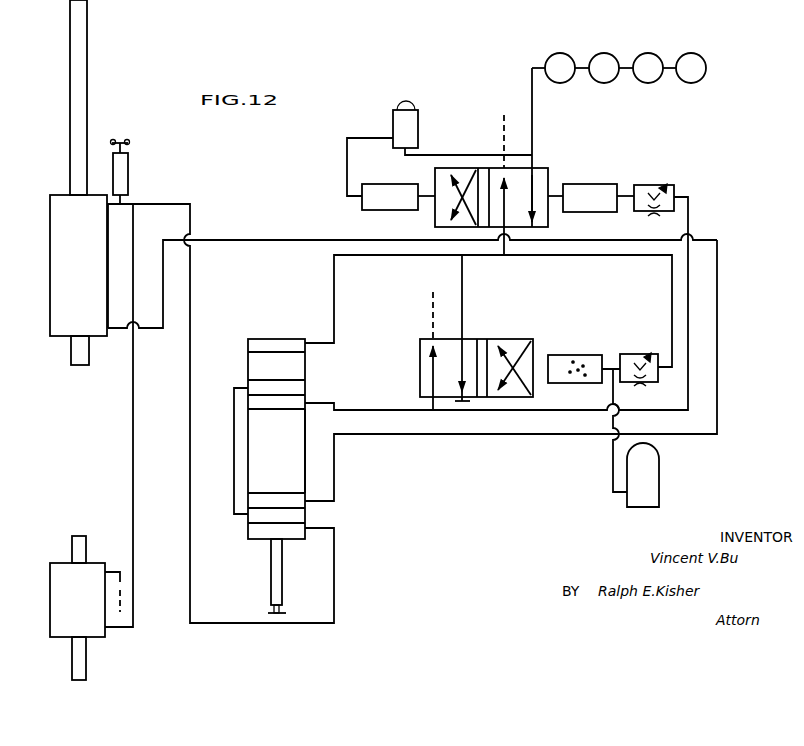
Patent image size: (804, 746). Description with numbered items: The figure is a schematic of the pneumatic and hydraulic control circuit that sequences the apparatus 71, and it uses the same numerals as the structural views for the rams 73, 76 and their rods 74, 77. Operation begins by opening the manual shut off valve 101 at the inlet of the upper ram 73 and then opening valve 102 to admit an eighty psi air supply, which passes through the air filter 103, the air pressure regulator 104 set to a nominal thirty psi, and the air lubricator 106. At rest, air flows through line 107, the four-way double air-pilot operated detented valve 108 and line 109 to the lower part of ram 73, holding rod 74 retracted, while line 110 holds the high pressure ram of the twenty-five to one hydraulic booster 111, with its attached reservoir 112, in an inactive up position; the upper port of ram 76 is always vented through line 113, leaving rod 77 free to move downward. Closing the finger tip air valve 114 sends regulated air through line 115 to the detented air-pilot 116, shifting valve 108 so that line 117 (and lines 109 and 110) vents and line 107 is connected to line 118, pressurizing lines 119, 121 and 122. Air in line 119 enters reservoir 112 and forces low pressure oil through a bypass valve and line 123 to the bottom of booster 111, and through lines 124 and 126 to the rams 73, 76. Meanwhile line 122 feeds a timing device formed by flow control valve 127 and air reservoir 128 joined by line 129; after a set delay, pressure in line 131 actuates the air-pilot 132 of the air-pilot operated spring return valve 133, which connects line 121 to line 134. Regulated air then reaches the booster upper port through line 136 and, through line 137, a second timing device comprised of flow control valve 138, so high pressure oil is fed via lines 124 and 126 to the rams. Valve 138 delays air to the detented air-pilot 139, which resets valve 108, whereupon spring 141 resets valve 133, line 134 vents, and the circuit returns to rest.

The apparatus 71 is at (122, 423).
The upper ram 73 is at (55, 263).
The rod 74 is at (70, 112).
The ram 76 is at (55, 585).
The rod 77 is at (72, 545).
The manual shut off valve 101 is at (129, 174).
The valve 102 is at (691, 52).
The air filter 103 is at (648, 52).
The air pressure regulator 104 is at (604, 52).
The air lubricator 106 is at (560, 52).
The line 107 is at (530, 88).
The four-way double air-pilot operated detented valve 108 is at (552, 172).
The line 109 is at (163, 298).
The line 110 is at (337, 465).
The hydraulic booster 111 is at (308, 430).
The reservoir 112 is at (248, 363).
The line 113 is at (116, 572).
The finger tip air valve 114 is at (418, 130).
The line 115 is at (347, 162).
The detented air-pilot 116 is at (384, 184).
The line 117 is at (547, 235).
The line 118 is at (507, 247).
The line 119 is at (382, 255).
The line 121 is at (463, 283).
The line 122 is at (616, 255).
The line 123 is at (234, 440).
The line 124 is at (192, 217).
The line 126 is at (136, 452).
The flow control valve 127 is at (628, 353).
The air reservoir 128 is at (660, 478).
The line 129 is at (612, 395).
The line 131 is at (608, 365).
The air-pilot 132 is at (578, 358).
The air-pilot operated spring return valve 133 is at (508, 337).
The line 134 is at (433, 402).
The line 136 is at (351, 405).
The line 137 is at (690, 217).
The flow control valve 138 is at (678, 186).
The detented air-pilot 139 is at (615, 183).
The spring 141 is at (418, 366).